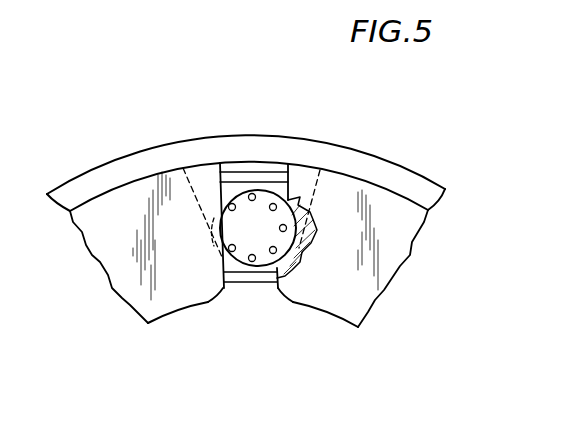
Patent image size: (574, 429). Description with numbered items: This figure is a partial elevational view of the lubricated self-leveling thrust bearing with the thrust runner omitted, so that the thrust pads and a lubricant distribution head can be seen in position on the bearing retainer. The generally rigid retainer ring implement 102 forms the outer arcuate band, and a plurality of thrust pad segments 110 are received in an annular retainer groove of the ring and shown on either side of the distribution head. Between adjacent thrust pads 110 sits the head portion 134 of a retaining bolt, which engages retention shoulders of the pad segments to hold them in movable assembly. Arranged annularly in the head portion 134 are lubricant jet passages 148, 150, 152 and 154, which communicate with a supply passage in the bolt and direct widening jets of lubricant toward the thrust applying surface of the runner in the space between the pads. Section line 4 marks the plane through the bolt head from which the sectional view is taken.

The section line 4- 4 is at (253, 90).
The retainer ring implement 102 is at (345, 158).
The thrust pad segments 110 is at (105, 211).
The head portion 134 is at (258, 215).
The lubricant jet passage 148 is at (252, 263).
The lubricant jet passage 150 is at (300, 240).
The lubricant jet passage 152 is at (214, 237).
The lubricant jet passage 154 is at (251, 193).